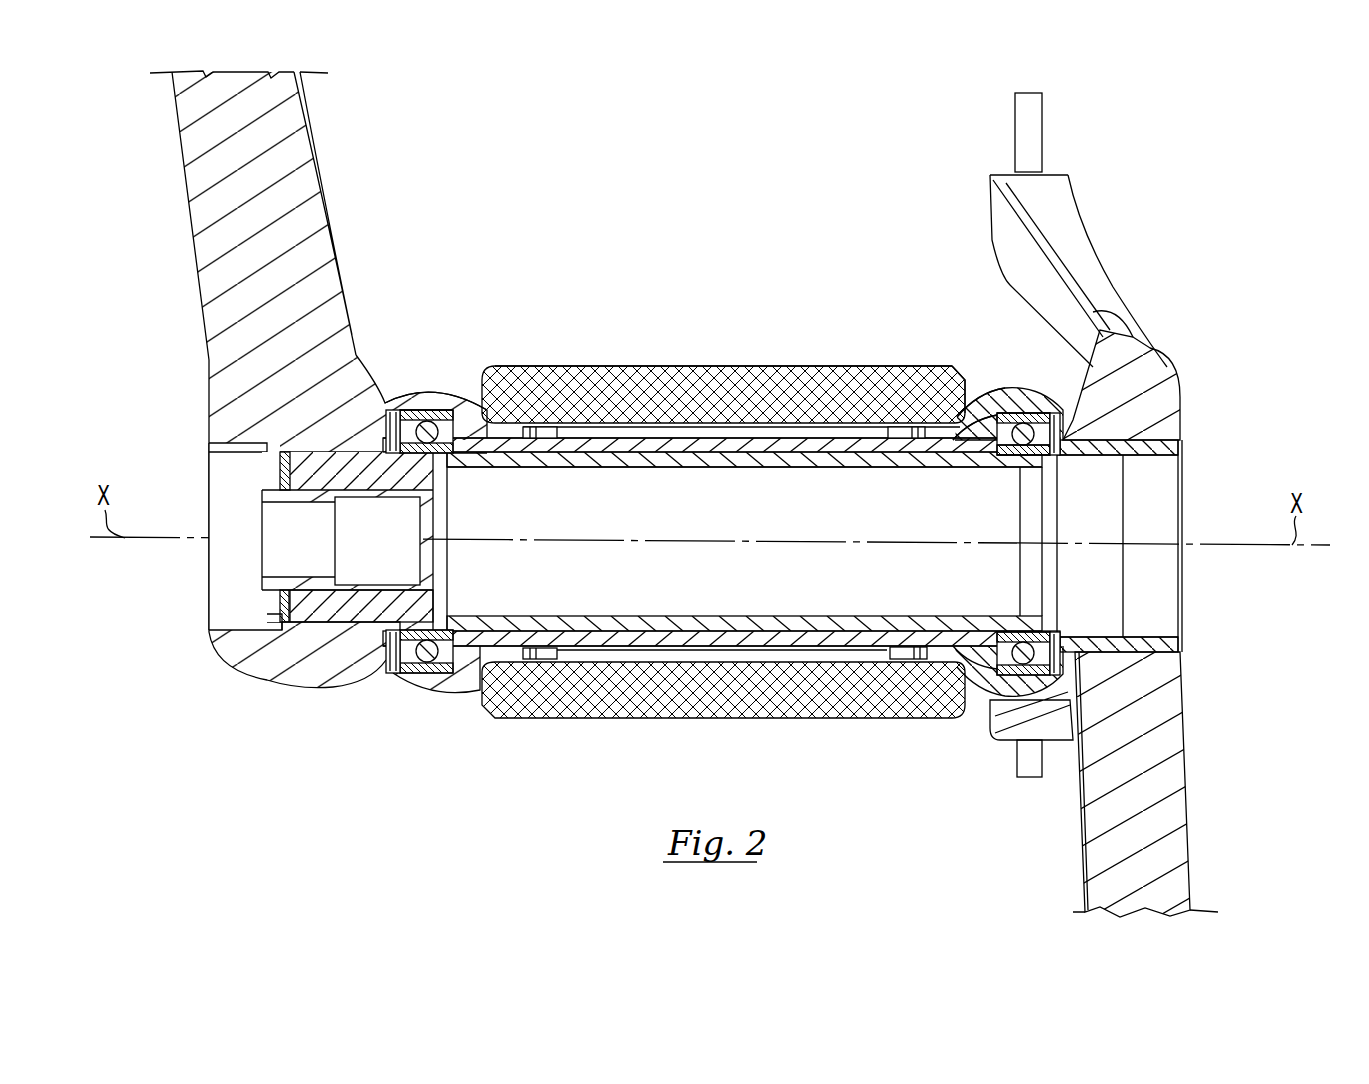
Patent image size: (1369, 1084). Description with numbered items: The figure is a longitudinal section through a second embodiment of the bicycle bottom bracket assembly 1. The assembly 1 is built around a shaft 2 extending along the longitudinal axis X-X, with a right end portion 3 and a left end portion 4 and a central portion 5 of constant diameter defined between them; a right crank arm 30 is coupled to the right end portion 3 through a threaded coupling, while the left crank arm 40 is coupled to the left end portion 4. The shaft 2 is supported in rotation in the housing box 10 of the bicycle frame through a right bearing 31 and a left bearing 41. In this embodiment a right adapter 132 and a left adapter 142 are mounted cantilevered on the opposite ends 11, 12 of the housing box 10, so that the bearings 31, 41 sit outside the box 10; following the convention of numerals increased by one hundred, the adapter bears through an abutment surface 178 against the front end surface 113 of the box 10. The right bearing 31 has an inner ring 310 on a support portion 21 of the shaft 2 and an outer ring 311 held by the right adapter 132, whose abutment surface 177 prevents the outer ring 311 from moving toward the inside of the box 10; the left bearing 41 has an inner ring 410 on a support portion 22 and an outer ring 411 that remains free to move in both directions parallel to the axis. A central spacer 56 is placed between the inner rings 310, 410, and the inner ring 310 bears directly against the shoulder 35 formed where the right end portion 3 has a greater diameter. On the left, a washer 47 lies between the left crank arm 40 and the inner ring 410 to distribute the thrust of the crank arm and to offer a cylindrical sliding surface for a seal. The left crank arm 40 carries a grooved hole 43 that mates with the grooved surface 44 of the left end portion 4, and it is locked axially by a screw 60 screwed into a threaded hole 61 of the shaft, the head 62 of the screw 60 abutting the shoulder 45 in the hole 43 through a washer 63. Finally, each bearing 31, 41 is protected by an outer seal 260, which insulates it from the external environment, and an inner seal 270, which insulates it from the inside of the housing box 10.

The bicycle bottom bracket assembly 1 is at (718, 240).
The shaft 2 is at (695, 458).
The right end portion 3 is at (1130, 431).
The left end portion 4 is at (305, 442).
The central portion 5 is at (748, 469).
The housing box 10 is at (650, 364).
The right end of housing box 11 is at (931, 365).
The left end of housing box 12 is at (522, 366).
The support portion 21 is at (1003, 470).
The support portion 22 is at (432, 458).
The right crank arm 30 is at (1170, 740).
The right bearing 31 is at (1023, 428).
The shoulder 35 is at (1062, 447).
The left crank arm 40 is at (212, 255).
The left bearing 41 is at (430, 428).
The grooved hole 43 is at (343, 622).
The grooved surface 44 is at (363, 607).
The shoulder 45 is at (292, 623).
The washer 47 is at (392, 420).
The central spacer 56 is at (645, 442).
The screw 60 is at (275, 553).
The threaded hole 61 is at (397, 586).
The head 62 is at (209, 466).
The washer 63 is at (273, 610).
The right front end surface 113 is at (955, 395).
The right adapter 132 is at (985, 400).
The left adapter 142 is at (437, 400).
The abutment surface 177 is at (1005, 456).
The abutment surface 178 is at (955, 414).
The outer seal 260 is at (384, 452).
The inner seal 270 is at (529, 441).
The inner ring 310 is at (1013, 466).
The outer ring 311 is at (1010, 412).
The inner ring 410 is at (453, 465).
The outer ring 411 is at (418, 410).